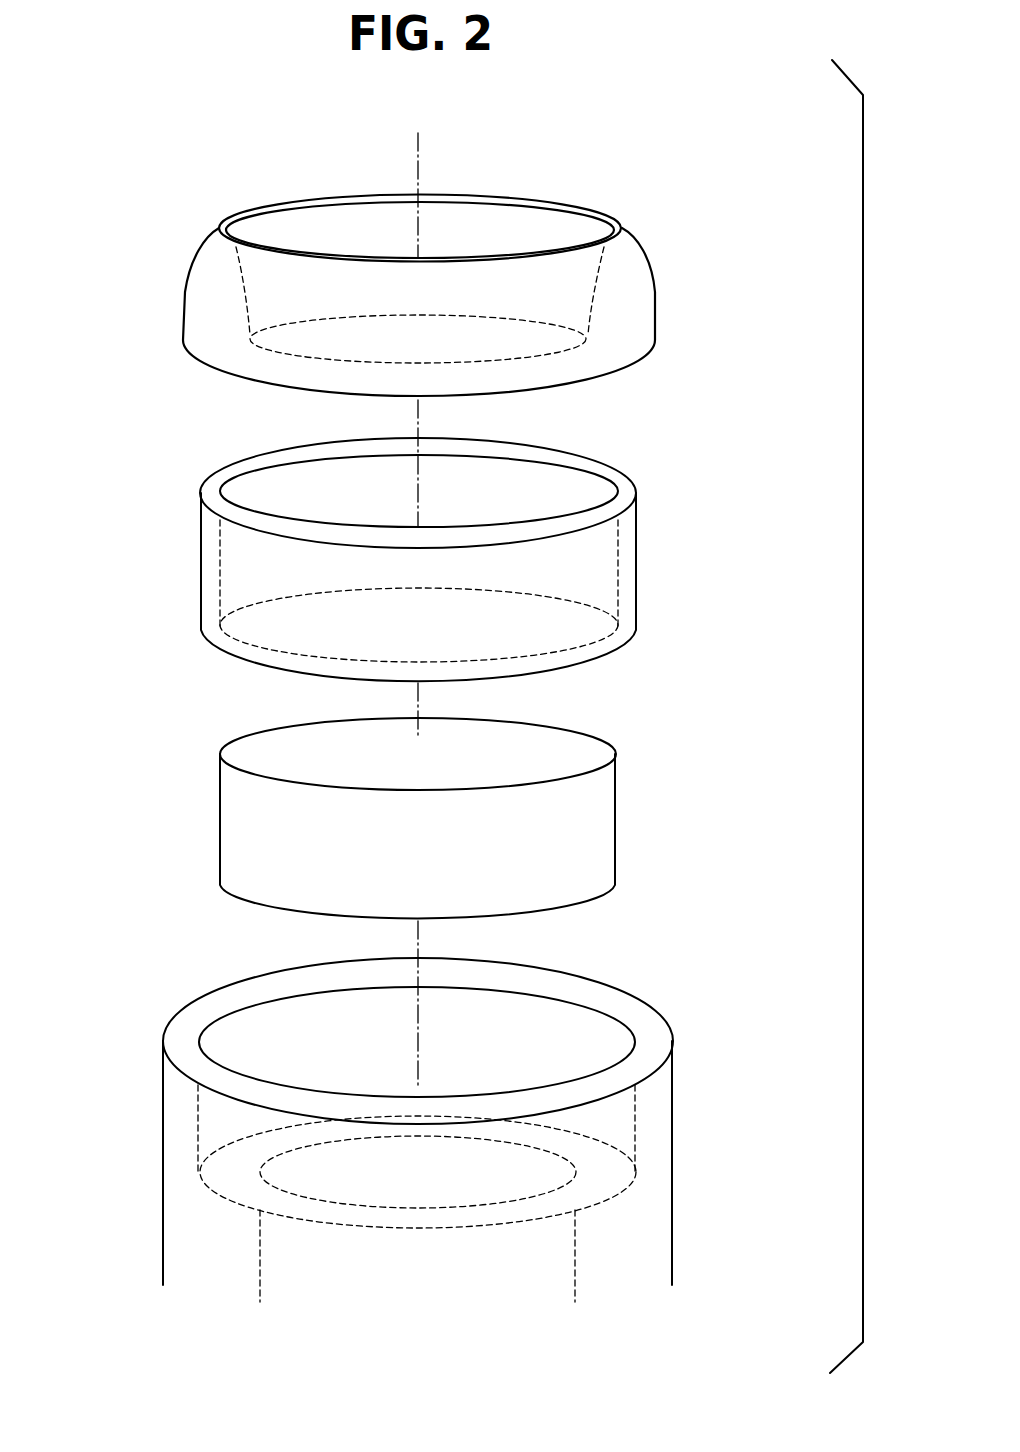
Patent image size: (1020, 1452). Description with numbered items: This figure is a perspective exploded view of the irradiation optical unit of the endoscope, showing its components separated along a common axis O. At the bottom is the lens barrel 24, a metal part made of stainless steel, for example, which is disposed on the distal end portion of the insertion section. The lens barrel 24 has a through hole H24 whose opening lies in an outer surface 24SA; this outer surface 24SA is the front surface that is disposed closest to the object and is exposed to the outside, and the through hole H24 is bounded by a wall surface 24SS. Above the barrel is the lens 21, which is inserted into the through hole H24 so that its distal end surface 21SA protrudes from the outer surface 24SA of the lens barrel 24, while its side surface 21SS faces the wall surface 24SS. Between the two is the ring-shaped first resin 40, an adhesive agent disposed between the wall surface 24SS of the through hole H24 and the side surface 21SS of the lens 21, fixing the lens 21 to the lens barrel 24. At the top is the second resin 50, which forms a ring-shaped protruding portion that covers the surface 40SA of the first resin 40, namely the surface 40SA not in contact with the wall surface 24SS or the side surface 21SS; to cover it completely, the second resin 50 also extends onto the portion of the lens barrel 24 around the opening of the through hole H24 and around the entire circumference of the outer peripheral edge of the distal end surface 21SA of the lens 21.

The central axis O is at (420, 594).
The second resin 50 is at (632, 283).
The first resin 40 is at (637, 559).
The surface of the first resin 40SA is at (212, 478).
The lens 21 is at (615, 802).
The distal end surface of the lens 21SA is at (542, 730).
The side surface of the lens 21SS is at (206, 800).
The lens barrel 24 is at (672, 1119).
The outer surface of the lens barrel 24SA is at (650, 1032).
The wall surface of the through hole 24SS is at (236, 1046).
The through hole H24 is at (542, 1030).